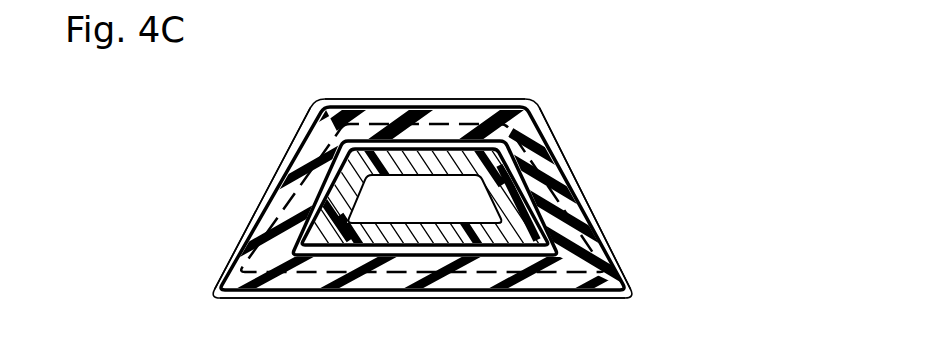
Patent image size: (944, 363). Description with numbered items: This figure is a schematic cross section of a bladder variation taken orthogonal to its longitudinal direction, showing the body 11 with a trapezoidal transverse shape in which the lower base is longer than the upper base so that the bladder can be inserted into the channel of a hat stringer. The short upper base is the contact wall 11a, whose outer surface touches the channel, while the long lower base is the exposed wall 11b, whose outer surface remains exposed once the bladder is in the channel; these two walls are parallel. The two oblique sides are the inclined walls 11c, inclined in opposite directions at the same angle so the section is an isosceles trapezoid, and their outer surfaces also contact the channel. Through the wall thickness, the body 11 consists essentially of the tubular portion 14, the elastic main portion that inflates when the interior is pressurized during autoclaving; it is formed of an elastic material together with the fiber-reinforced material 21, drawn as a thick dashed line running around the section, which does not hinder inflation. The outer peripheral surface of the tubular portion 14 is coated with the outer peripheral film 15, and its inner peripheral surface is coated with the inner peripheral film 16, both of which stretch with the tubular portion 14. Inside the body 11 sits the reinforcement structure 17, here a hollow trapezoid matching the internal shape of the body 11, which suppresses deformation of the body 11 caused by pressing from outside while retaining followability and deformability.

The body 11 is at (698, 128).
The contact wall 11a is at (428, 99).
The exposed wall 11b is at (415, 299).
The inclined wall 11c is at (289, 151).
The tubular portion 14 is at (570, 187).
The outer peripheral film 15 is at (562, 150).
The inner peripheral film 16 is at (552, 231).
The reinforcement structure 17 is at (345, 216).
The fiber-reinforced material 21 is at (248, 262).